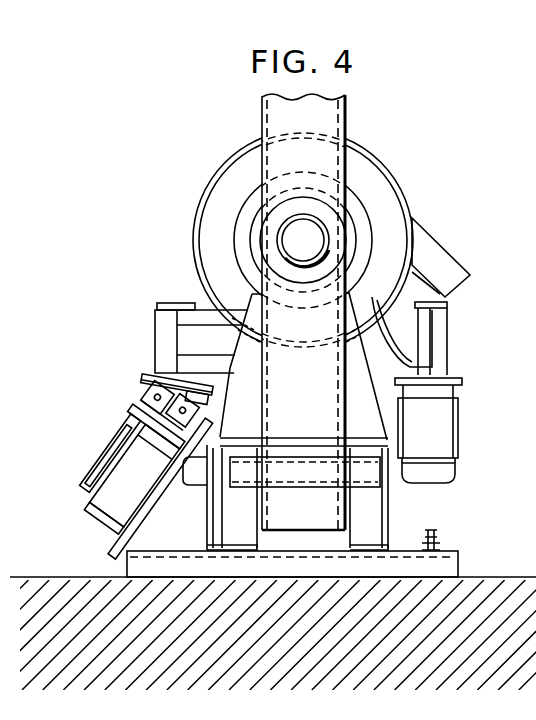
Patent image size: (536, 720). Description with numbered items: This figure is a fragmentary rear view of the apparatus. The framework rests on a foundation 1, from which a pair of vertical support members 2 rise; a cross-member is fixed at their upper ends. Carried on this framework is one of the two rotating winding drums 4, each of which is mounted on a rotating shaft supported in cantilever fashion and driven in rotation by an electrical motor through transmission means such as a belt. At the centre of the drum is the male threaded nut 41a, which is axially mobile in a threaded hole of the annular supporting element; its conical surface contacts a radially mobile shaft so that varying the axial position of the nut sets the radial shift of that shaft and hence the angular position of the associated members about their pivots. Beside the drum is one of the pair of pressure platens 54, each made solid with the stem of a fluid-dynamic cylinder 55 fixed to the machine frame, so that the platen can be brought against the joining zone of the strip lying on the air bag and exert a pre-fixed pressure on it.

The foundation 1 is at (448, 550).
The vertical support members 2 is at (330, 112).
The rotating winding drum 4 is at (232, 155).
The male threaded nut 41a is at (278, 236).
The pressure platen 54 is at (190, 367).
The fluid-dynamic cylinder 55 is at (147, 447).